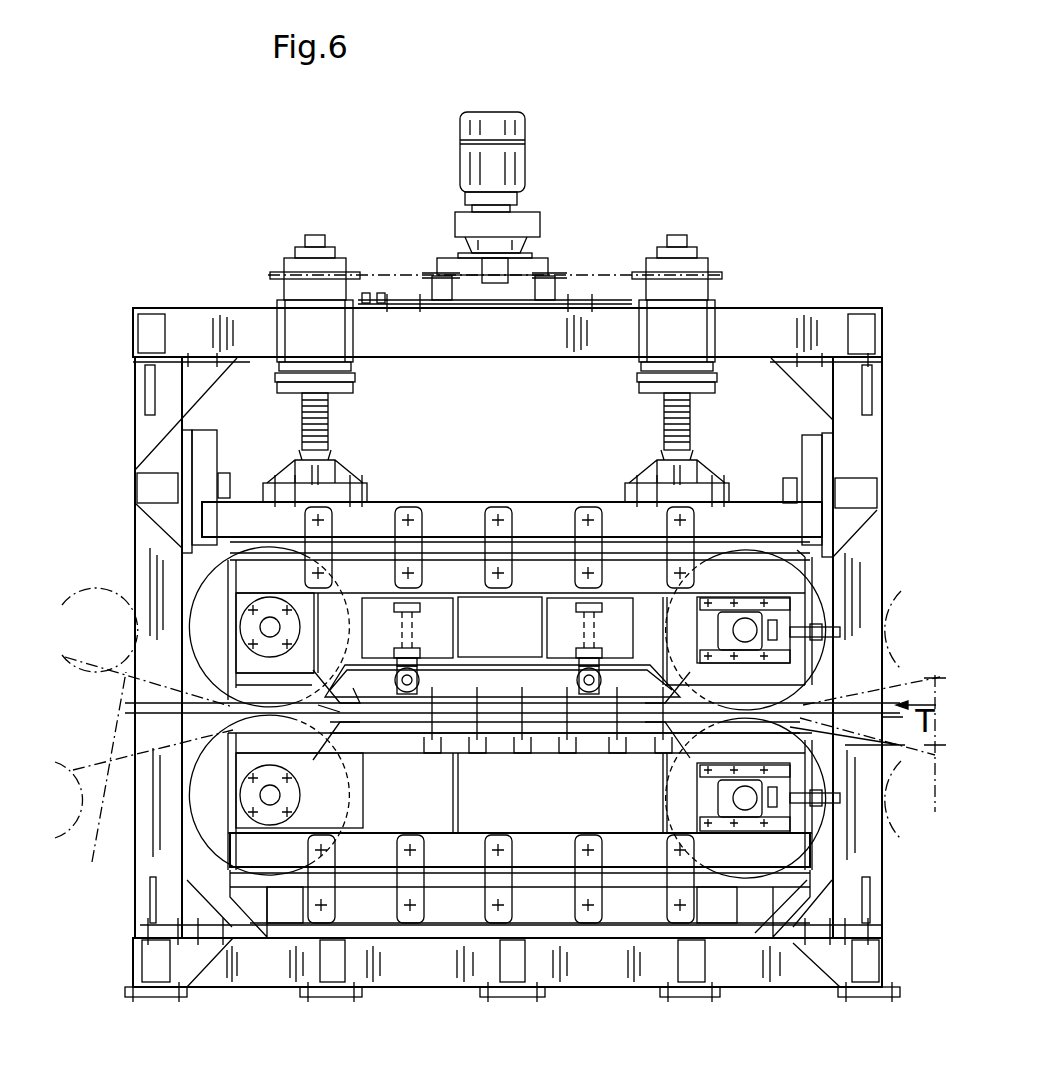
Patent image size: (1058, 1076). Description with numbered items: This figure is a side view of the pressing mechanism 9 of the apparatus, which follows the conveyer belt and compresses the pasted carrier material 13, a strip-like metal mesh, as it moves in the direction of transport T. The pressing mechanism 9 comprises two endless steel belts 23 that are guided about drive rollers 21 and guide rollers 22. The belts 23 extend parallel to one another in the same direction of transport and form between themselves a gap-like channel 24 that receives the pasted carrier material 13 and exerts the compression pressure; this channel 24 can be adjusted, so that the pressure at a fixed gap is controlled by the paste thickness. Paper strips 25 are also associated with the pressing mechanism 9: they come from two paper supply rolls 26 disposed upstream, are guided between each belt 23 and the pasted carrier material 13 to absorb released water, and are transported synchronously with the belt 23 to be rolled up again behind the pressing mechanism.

The pressing mechanism 9 is at (848, 307).
The carrier material 13 is at (861, 945).
The drive rollers 21 is at (207, 605).
The guide rollers 22 is at (716, 552).
The endless steel belts 23 is at (450, 543).
The gap-like channel 24 is at (815, 692).
The paper strips 25 is at (128, 677).
The paper supply rolls 26 is at (907, 580).